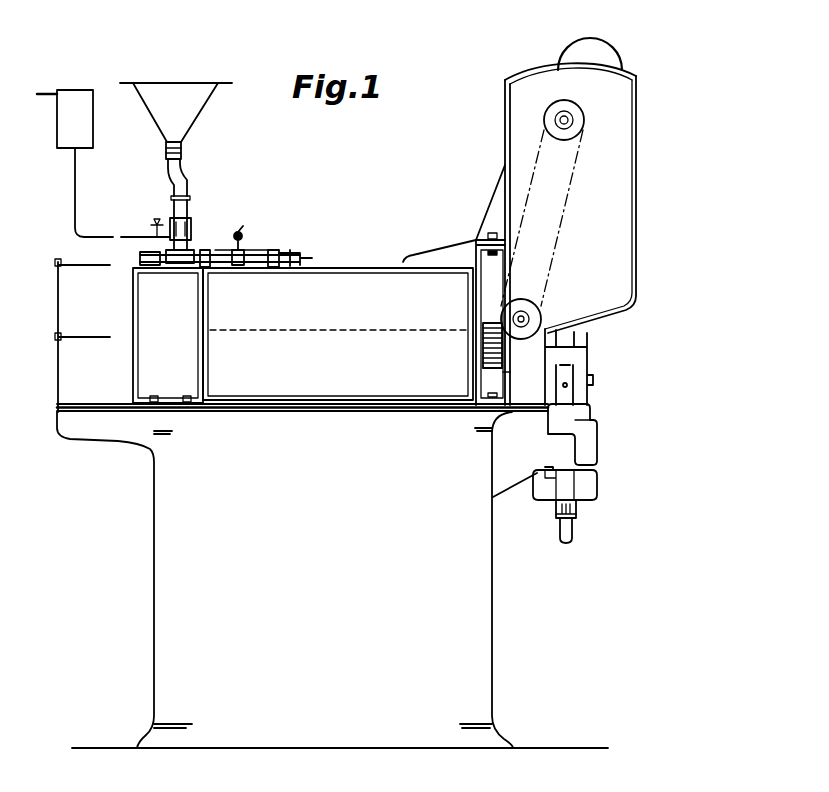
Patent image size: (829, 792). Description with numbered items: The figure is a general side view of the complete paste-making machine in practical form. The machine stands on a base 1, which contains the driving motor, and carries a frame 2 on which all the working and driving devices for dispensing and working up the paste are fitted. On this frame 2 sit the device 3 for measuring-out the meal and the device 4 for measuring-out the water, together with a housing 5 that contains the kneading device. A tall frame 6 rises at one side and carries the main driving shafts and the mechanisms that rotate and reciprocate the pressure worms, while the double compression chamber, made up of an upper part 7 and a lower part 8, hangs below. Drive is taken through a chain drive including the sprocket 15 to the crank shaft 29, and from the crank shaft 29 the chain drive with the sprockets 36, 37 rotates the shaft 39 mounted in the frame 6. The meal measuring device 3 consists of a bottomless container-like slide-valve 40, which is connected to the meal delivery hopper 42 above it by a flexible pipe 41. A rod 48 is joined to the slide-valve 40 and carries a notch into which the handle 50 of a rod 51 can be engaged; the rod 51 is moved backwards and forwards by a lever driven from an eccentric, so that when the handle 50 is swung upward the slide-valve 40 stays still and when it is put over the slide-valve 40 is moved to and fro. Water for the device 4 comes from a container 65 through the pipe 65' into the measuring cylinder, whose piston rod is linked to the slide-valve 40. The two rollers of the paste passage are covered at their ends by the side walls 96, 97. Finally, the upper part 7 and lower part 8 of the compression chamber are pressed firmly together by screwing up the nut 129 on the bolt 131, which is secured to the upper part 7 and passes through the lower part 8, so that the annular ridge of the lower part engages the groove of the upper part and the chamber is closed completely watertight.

The base 1 is at (493, 690).
The frame 2 is at (530, 388).
The device for measuring-out the meal 3 is at (188, 206).
The device for measuring-out the water 4 is at (170, 262).
The housing 5 is at (348, 272).
The frame 6 is at (636, 205).
The upper part of compression chamber 7 is at (588, 449).
The lower part of compression chamber 8 is at (486, 322).
The chain drive sprocket 15 is at (600, 48).
The crank shaft 29 is at (570, 123).
The chain drive sprocket 36 is at (578, 110).
The chain drive sprocket 37 is at (540, 302).
The shaft 39 is at (528, 318).
The container-like slide-valve 40 is at (191, 226).
The flexible pipe 41 is at (178, 172).
The meal delivery hopper 42 is at (207, 106).
The rod 48 is at (250, 262).
The handle 50 is at (244, 238).
The rod 51 is at (268, 258).
The container 65 is at (84, 119).
The pipe 65' is at (122, 192).
The side wall 96 is at (483, 371).
The side wall 97 is at (508, 388).
The nut 129 is at (576, 518).
The bolt 131 is at (574, 534).